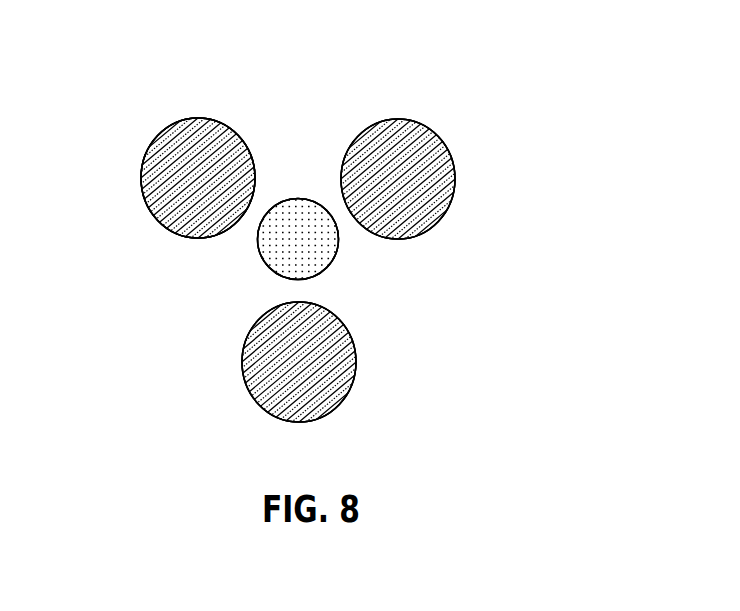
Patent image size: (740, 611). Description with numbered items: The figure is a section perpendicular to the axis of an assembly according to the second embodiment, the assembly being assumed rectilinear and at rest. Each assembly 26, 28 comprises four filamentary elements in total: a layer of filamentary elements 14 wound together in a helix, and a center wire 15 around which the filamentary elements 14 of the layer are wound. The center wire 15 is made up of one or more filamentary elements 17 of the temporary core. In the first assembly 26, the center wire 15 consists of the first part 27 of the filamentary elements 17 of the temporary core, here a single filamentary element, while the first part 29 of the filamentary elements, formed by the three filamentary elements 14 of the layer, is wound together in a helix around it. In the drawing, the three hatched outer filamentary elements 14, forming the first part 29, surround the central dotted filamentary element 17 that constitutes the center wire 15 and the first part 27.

The filamentary elements of the layer 14 is at (150, 205).
The center wire 15 is at (305, 170).
The filamentary element of the temporary core 17 is at (260, 242).
The first assembly 26 is at (450, 301).
The first part of the filamentary elements of the temporary core 27 is at (326, 277).
The assembly 28 is at (450, 301).
The first part of the filamentary elements 29 is at (190, 118).